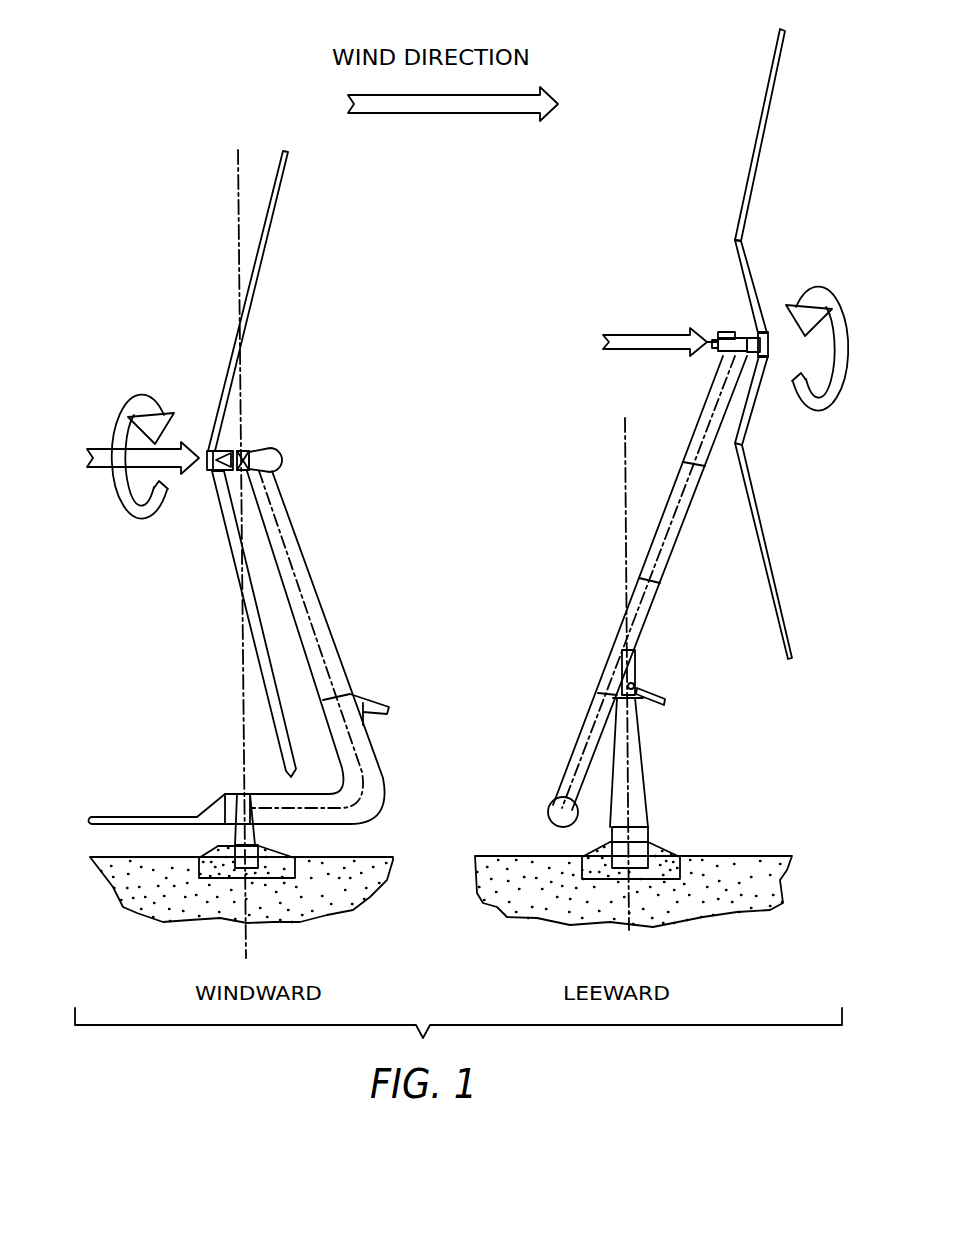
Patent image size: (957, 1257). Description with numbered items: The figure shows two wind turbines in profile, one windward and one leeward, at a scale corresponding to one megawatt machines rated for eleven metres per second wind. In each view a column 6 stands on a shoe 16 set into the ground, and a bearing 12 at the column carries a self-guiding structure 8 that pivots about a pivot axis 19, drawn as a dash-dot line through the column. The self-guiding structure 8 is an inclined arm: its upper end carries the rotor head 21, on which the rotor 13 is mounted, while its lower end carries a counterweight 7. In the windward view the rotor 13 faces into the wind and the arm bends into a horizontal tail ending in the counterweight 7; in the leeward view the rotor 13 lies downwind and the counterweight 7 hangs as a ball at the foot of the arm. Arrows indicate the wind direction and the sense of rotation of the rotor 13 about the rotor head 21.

The column 6 is at (253, 834).
The counterweight 7 is at (97, 822).
The self-guiding structure 8 is at (333, 667).
The bearing 12 is at (242, 797).
The rotor 13 is at (262, 266).
The shoe 16 is at (280, 868).
The pivot axis 19 is at (243, 677).
The rotor head 21 is at (270, 452).